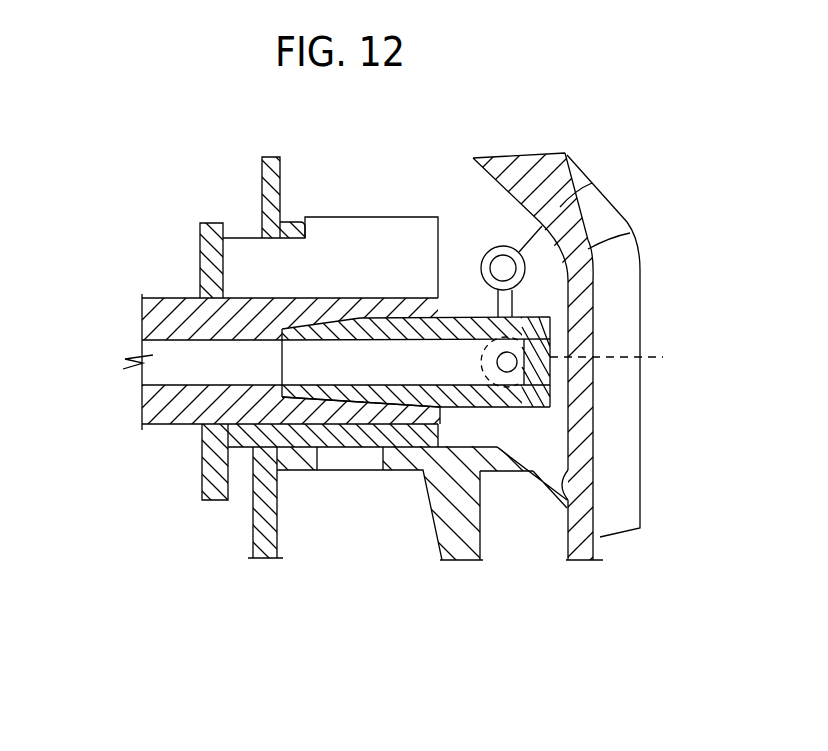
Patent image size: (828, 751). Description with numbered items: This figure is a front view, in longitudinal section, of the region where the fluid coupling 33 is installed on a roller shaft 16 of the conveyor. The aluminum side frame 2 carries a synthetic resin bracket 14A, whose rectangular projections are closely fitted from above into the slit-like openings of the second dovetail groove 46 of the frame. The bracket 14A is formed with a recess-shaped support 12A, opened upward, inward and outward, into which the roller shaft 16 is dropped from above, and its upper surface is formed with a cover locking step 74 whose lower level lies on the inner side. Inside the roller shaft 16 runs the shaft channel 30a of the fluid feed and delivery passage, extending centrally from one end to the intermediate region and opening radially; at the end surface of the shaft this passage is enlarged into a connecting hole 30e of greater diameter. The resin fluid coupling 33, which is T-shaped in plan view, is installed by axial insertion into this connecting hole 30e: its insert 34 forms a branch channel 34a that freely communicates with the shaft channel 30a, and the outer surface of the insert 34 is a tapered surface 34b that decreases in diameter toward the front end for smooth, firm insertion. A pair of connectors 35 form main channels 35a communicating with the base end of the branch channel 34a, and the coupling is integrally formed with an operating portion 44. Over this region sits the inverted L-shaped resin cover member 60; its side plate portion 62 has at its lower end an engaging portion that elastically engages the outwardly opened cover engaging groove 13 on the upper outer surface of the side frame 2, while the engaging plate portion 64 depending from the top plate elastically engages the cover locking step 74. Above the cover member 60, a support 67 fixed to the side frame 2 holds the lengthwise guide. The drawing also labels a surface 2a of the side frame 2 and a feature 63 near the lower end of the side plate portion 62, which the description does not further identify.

The side frame 2 is at (468, 548).
The mounting surface of base 2a is at (513, 447).
The cover engaging groove 13 is at (567, 500).
The bracket 14A is at (233, 437).
The roller shaft 16 is at (153, 403).
The recess-shaped support 12A is at (345, 235).
The shaft channel 30a is at (177, 353).
The connecting hole 30e is at (360, 320).
The fluid coupling 33 is at (562, 318).
The insert 34 is at (320, 400).
The branch channel 34a is at (416, 335).
The tapered surface 34b is at (307, 327).
The connector 35 is at (589, 362).
The main channel 35a is at (509, 369).
The operating portion 44 is at (592, 183).
The second dovetail groove 46 is at (350, 447).
The cover member 60 is at (534, 174).
The side plate portion 62 is at (630, 233).
The lip 63 is at (566, 482).
The engaging plate portion 64 is at (263, 197).
The support 67 is at (640, 323).
The cover locking step 74 is at (293, 223).